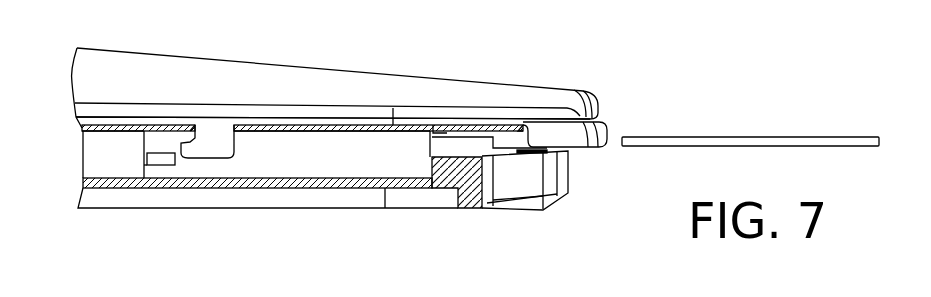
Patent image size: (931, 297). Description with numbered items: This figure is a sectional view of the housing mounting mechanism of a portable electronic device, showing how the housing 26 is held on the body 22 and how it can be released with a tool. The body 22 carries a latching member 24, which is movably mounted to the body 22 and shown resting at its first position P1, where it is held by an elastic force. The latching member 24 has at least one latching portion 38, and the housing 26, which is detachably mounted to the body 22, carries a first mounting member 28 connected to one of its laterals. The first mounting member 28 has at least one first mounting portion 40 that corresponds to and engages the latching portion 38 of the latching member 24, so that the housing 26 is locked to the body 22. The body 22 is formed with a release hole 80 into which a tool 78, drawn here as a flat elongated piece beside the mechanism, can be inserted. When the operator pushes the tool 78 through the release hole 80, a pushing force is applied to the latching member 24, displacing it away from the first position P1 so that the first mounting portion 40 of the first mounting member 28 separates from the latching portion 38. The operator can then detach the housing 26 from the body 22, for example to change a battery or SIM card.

The body 22 is at (300, 188).
The latching member 24 is at (435, 132).
The housing 26 is at (333, 67).
The first mounting member 28 is at (265, 117).
The latching portion 38 is at (166, 137).
The first mounting portion 40 is at (219, 137).
The tool 78 is at (733, 142).
The release hole 80 is at (496, 141).
The first position P1 is at (177, 143).